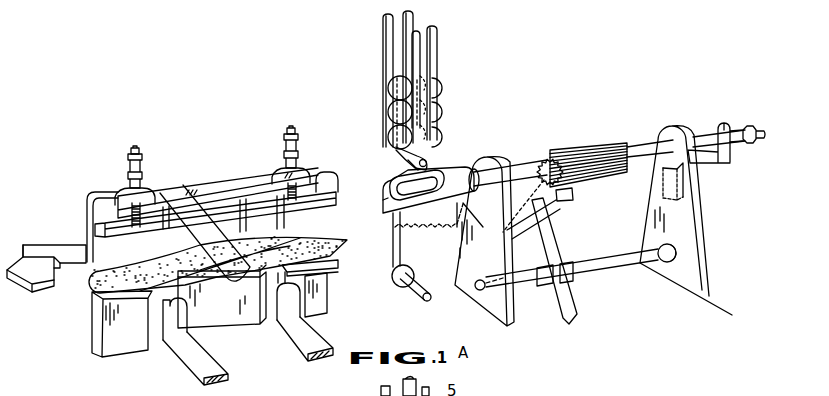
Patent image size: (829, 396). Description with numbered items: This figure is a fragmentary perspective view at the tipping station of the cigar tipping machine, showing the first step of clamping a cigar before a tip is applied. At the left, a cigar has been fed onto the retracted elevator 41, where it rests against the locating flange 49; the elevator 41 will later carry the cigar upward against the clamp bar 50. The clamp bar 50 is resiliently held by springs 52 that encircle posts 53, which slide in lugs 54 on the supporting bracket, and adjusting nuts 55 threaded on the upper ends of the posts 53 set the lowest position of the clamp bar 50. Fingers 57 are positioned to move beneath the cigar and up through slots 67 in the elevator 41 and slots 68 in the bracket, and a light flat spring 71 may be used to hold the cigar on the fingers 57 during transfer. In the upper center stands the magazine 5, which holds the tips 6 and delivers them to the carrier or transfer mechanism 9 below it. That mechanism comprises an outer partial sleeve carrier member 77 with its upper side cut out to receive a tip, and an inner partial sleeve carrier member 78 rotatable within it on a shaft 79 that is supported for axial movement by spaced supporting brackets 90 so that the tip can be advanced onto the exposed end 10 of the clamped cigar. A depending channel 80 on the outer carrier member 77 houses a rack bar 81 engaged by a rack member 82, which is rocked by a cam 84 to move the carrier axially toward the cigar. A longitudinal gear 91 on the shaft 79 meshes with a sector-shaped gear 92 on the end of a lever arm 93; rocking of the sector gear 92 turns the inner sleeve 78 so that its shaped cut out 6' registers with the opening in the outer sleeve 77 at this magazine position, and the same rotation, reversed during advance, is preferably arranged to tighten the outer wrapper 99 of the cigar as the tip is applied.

The magazine 5 is at (435, 68).
The tips 6 is at (426, 112).
The shaped cut out 6' is at (437, 143).
The carrier or transfer mechanism 9 is at (454, 163).
The exposed end of a cigar 10 is at (337, 239).
The elevator 41 is at (80, 339).
The locating flange 49 is at (212, 276).
The clamp bar 50 is at (111, 225).
The springs 52 is at (115, 197).
The posts 53 is at (139, 148).
The lugs 54 is at (276, 166).
The adjusting nuts 55 is at (144, 174).
The fingers 57 is at (197, 357).
The slots 67 is at (153, 325).
The slots 68 is at (125, 243).
The light flat spring 71 is at (205, 233).
The outer partial sleeve carrier member 77 is at (482, 158).
The inner partial sleeve carrier member 78 is at (397, 193).
The shaft 79 is at (523, 170).
The depending channel 80 is at (390, 227).
The rack bar 81 is at (443, 233).
The rack member 82 is at (403, 260).
The cam 84 is at (417, 290).
The supporting brackets 90 is at (492, 240).
The longitudinal gear 91 is at (602, 150).
The sector-shaped gear 92 is at (550, 200).
The lever arm 93 is at (552, 254).
The outer wrapper 99 is at (290, 250).